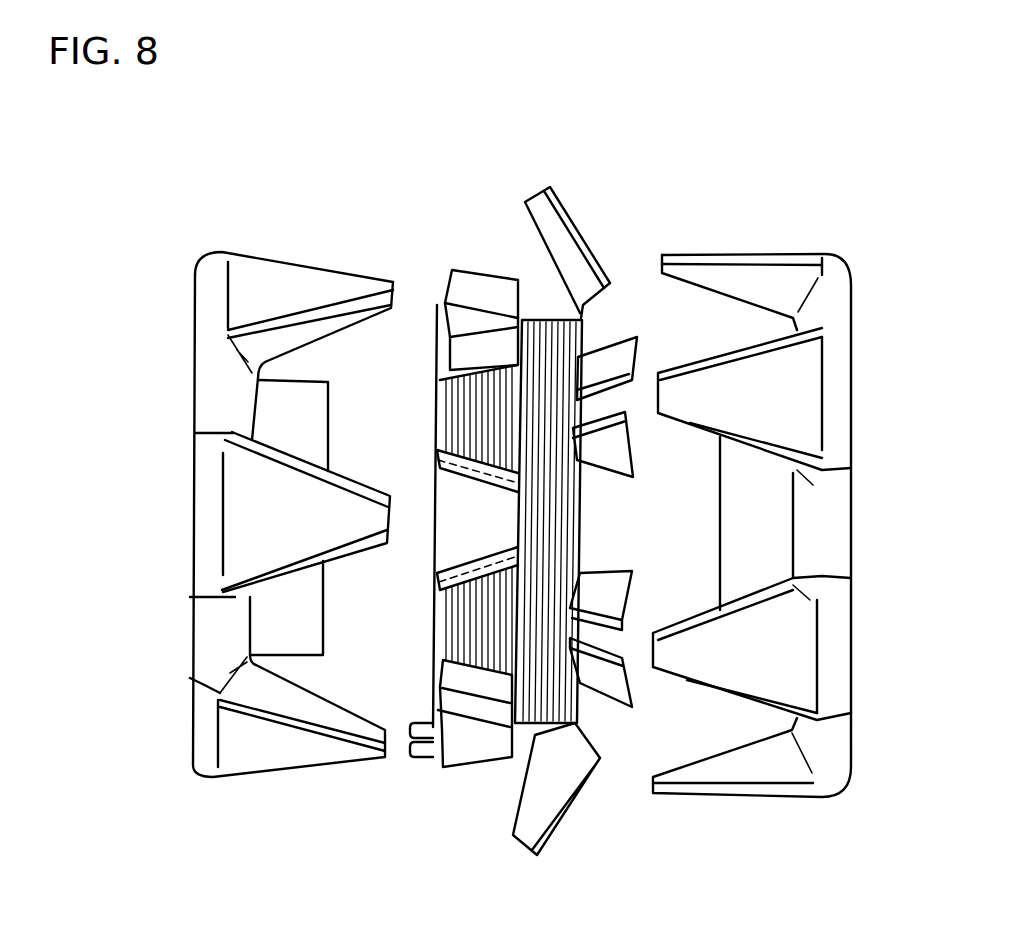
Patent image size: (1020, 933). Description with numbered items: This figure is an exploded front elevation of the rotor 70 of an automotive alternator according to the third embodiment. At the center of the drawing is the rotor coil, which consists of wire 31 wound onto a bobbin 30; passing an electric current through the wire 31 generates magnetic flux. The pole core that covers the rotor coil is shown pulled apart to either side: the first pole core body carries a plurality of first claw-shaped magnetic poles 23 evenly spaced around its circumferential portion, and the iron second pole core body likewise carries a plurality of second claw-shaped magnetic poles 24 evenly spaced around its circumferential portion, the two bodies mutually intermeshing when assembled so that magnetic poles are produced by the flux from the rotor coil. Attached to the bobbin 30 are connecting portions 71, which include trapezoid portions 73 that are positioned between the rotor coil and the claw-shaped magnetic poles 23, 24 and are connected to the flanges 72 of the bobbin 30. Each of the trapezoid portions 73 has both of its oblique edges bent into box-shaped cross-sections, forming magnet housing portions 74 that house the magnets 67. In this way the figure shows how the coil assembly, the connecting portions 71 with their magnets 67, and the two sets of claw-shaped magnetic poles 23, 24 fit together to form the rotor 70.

The first claw-shaped magnetic poles 23 is at (718, 382).
The second claw-shaped magnetic poles 24 is at (298, 282).
The bobbin 30 is at (437, 393).
The wire 31 is at (535, 737).
The magnets 67 is at (438, 472).
The rotor 70 is at (450, 282).
The connecting portions 71 is at (580, 232).
The flanges 72 is at (586, 316).
The trapezoid portions 73 is at (440, 540).
The magnet housing portions 74 is at (617, 588).